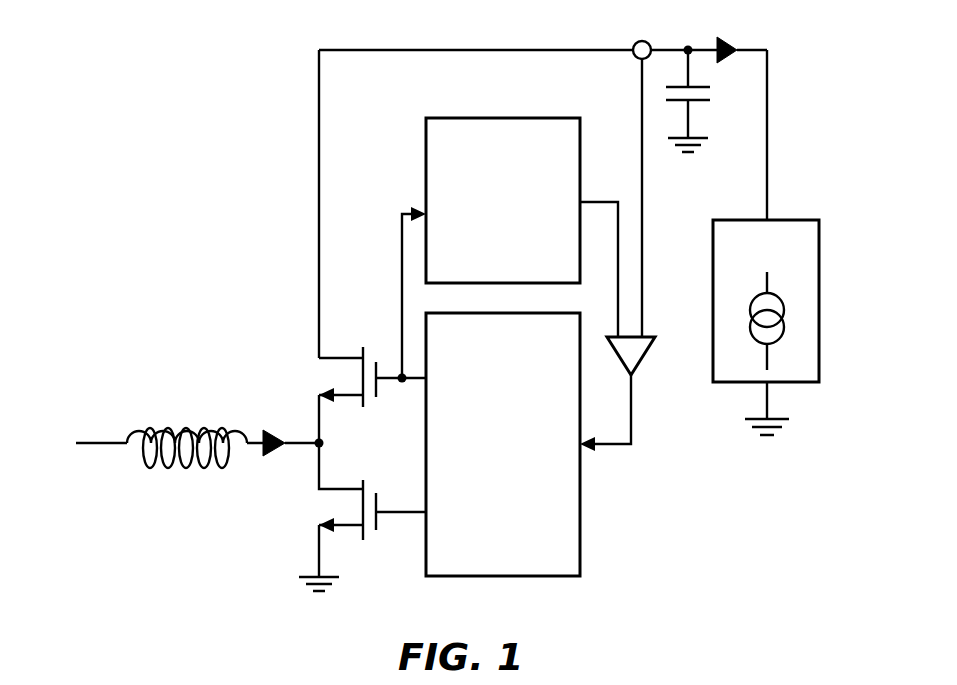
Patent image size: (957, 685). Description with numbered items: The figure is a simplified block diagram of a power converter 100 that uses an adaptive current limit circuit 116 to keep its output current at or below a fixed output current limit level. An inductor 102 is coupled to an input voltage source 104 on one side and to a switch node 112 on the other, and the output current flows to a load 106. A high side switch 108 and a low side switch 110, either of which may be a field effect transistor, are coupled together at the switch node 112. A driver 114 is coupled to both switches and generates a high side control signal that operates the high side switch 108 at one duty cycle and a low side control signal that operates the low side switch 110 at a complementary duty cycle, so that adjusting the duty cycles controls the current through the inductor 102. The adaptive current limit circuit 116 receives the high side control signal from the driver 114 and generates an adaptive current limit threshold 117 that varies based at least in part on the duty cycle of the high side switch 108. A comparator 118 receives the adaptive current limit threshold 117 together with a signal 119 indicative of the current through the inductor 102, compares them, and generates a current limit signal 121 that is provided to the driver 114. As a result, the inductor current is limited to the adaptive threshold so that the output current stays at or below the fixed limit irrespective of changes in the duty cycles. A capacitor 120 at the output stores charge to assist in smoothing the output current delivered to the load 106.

The power converter 100 is at (248, 142).
The inductor 102 is at (180, 428).
The input voltage source 104 is at (60, 462).
The load 106 is at (808, 283).
The high side switch 108 is at (343, 355).
The low side switch 110 is at (337, 492).
The switch node 112 is at (317, 440).
The driver 114 is at (485, 473).
The adaptive current limit circuit 116 is at (485, 270).
The adaptive current limit threshold 117 is at (618, 247).
The comparator 118 is at (645, 358).
The signal indicative of the current through the inductor 119 is at (640, 100).
The capacitor 120 is at (700, 107).
The current limit signal 121 is at (608, 445).